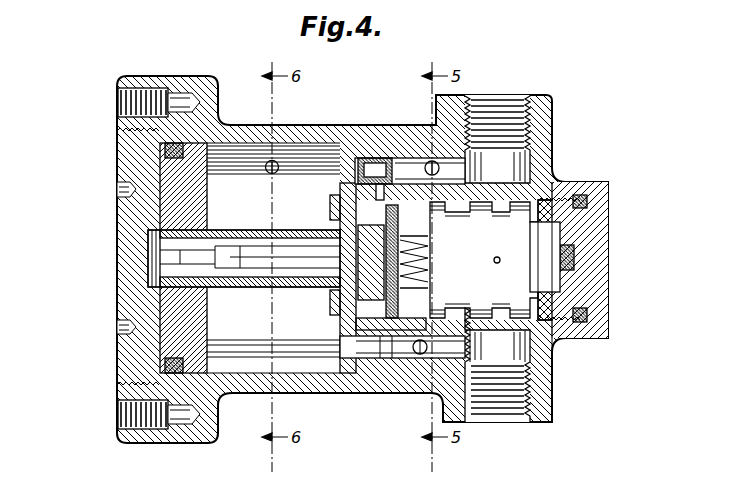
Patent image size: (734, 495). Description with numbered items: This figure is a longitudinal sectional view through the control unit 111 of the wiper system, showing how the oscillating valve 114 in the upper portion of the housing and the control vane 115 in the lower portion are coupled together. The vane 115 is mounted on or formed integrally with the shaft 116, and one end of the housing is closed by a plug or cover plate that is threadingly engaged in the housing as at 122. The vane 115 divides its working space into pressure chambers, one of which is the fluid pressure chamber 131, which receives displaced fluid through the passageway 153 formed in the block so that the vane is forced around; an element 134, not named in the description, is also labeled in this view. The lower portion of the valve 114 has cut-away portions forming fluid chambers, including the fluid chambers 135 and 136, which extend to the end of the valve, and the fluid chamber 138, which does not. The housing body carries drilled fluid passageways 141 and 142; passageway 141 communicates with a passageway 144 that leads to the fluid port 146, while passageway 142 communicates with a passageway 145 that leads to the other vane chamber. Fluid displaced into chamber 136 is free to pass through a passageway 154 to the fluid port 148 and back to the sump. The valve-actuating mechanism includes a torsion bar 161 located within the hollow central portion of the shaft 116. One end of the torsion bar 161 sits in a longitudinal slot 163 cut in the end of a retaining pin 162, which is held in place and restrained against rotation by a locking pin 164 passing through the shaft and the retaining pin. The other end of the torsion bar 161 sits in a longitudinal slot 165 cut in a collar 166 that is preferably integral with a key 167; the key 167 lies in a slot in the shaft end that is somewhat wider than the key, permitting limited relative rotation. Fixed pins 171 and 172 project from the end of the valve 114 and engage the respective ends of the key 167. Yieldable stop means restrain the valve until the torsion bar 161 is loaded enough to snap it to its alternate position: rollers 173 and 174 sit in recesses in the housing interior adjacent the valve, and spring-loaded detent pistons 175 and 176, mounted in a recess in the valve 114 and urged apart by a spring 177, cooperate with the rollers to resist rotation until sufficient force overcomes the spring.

The control unit 111 is at (608, 197).
The valve 114 is at (523, 207).
The control vane 115 is at (255, 256).
The shaft 116 is at (287, 212).
The threaded engagement 122 is at (550, 203).
The fluid pressure chamber 131 is at (552, 305).
The nut 134 is at (356, 322).
The fluid chamber 135 is at (372, 160).
The fluid chamber 136 is at (355, 345).
The fluid chamber 138 is at (555, 345).
The fluid passageway 141 is at (413, 165).
The fluid passageway 142 is at (417, 354).
The passageway 144 is at (379, 190).
The passageway 145 is at (373, 347).
The fluid port 146 is at (520, 122).
The fluid port 148 is at (500, 405).
The passageway 153 is at (268, 161).
The passageway 154 is at (540, 352).
The torsion bar 161 is at (233, 254).
The retaining pin 162 is at (150, 262).
The longitudinal slot 163 is at (150, 280).
The locking pin 164 is at (150, 241).
The longitudinal slot 165 is at (335, 215).
The collar 166 is at (332, 294).
The key 167 is at (357, 285).
The fixed pin 171 is at (339, 196).
The fixed pin 172 is at (352, 322).
The roller 173 is at (497, 167).
The roller 174 is at (388, 345).
The detent piston 175 is at (399, 222).
The detent piston 176 is at (415, 292).
The spring 177 is at (414, 262).